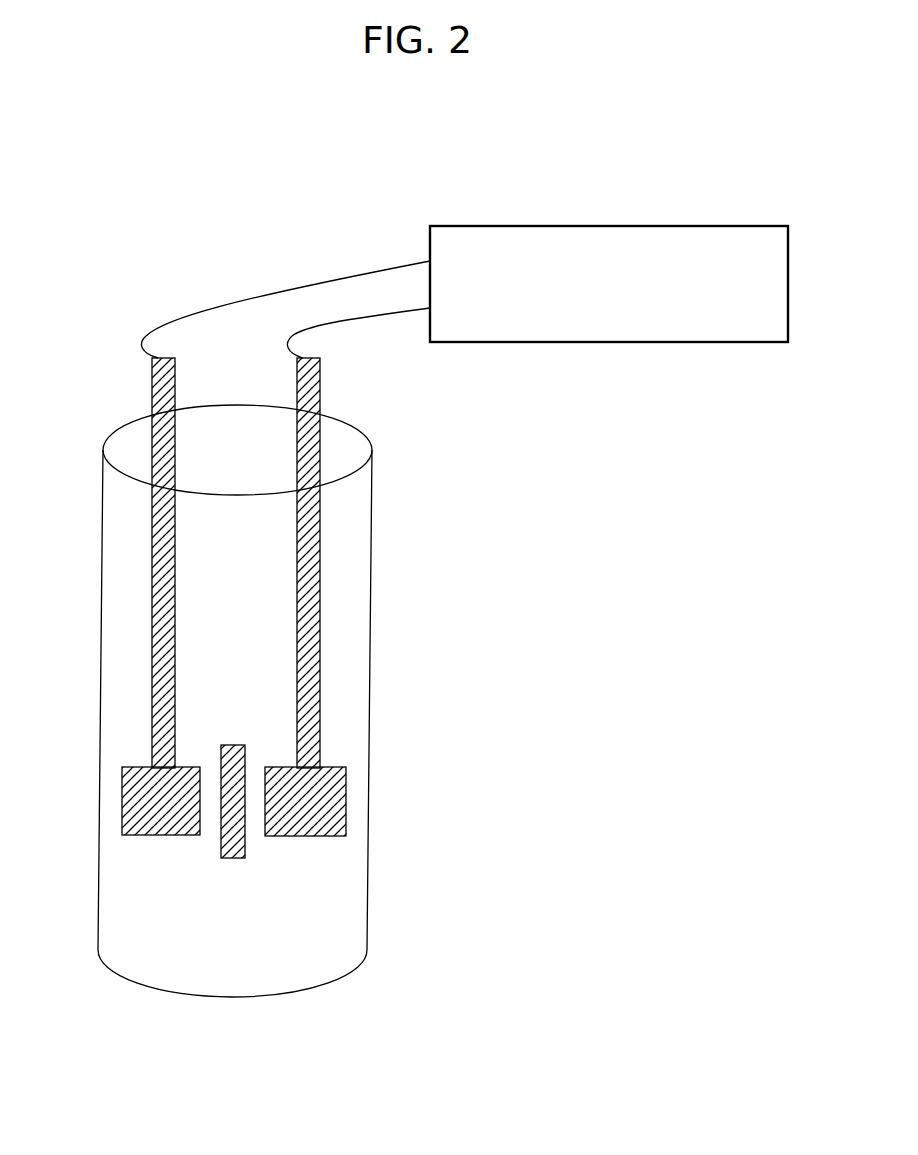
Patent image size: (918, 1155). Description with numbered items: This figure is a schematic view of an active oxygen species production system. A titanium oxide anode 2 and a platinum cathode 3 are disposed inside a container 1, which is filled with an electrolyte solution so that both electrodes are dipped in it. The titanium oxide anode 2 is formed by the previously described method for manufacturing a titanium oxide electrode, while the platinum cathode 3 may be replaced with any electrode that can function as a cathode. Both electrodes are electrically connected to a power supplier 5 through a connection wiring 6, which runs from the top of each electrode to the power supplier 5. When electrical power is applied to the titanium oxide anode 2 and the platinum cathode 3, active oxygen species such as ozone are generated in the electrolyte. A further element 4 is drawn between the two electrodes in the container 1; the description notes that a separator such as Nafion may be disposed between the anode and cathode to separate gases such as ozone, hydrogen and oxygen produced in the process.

The container 1 is at (101, 565).
The titanium oxide anode 2 is at (128, 802).
The platinum cathode 3 is at (338, 805).
The reference electrode 4 is at (245, 845).
The power supplier 5 is at (624, 343).
The connection wiring 6 is at (322, 328).